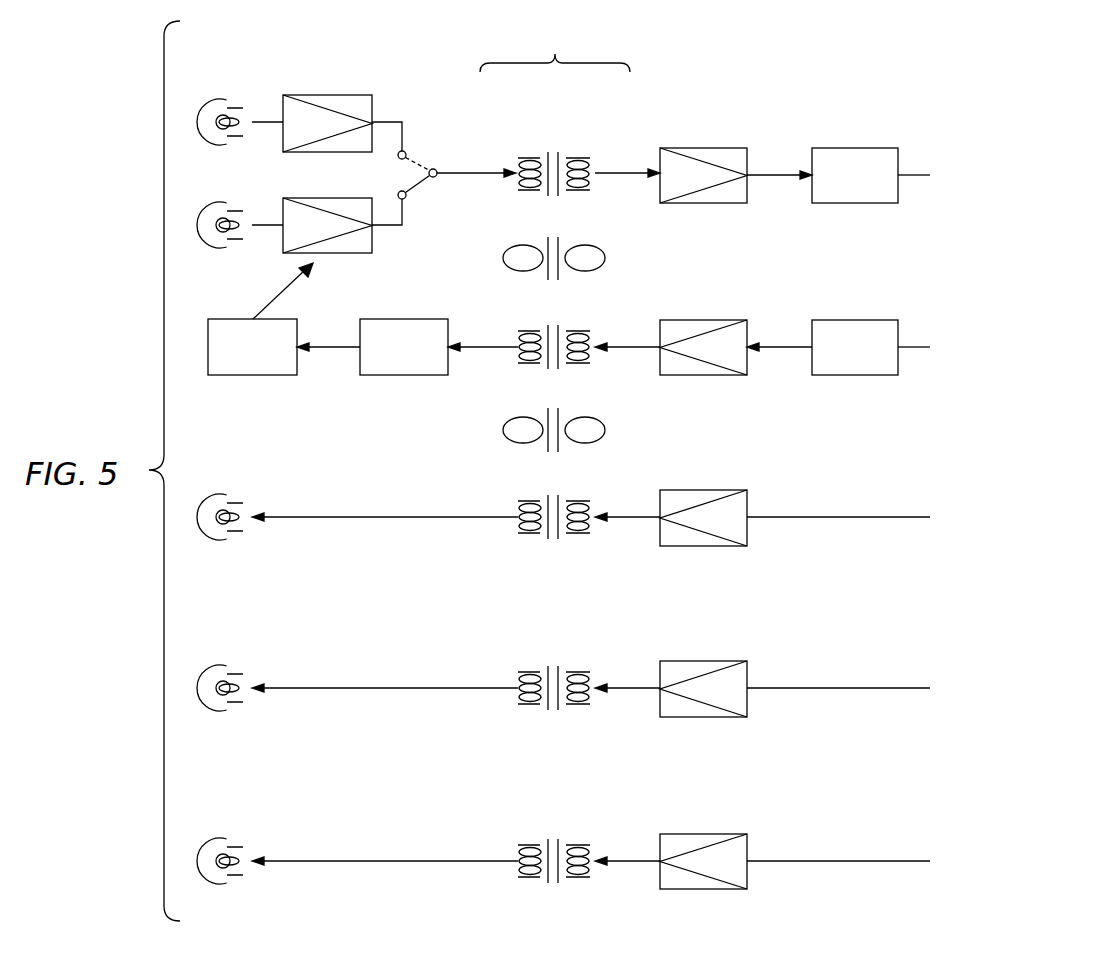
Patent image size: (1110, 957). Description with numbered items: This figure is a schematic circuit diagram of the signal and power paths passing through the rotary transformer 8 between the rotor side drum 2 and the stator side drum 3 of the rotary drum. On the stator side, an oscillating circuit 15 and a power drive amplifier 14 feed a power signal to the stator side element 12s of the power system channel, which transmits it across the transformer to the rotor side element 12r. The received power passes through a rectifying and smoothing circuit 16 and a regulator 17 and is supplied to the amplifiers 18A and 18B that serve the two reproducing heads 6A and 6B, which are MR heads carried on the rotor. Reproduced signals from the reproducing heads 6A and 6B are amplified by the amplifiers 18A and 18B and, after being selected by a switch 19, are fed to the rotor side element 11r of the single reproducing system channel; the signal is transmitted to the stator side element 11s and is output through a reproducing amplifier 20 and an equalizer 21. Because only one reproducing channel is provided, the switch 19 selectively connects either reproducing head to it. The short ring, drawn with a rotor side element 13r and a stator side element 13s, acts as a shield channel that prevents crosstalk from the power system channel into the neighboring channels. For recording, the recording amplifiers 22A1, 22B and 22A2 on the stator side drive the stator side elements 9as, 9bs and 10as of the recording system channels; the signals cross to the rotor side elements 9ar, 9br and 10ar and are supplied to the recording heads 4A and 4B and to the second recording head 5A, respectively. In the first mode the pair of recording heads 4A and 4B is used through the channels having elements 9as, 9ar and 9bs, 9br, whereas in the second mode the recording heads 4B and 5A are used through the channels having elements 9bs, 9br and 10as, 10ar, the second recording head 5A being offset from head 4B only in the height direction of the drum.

The rotor side drum 2 is at (525, 151).
The stator side drum 3 is at (583, 151).
The recording head 4A is at (215, 666).
The recording head 4B is at (214, 495).
The second recording head 5A is at (215, 839).
The reproducing head 6A is at (214, 100).
The reproducing head 6B is at (214, 205).
The rotary transformer 8 is at (547, 47).
The rotor side element of recording system channel 9a 9ar is at (522, 706).
The stator side element of recording system channel 9a 9as is at (586, 706).
The rotor side element of recording system channel 9b 9br is at (522, 535).
The stator side element of recording system channel 9b 9bs is at (586, 535).
The rotor side element of recording system channel 10a 10ar is at (522, 879).
The stator side element of recording system channel 10a 10as is at (586, 879).
The rotor side element of reproducing system channel 11 11r is at (522, 192).
The stator side element of reproducing system channel 11 11s is at (586, 192).
The rotor side element of power system channel 12 12r is at (522, 365).
The stator side element of power system channel 12 12s is at (586, 365).
The rotor side element of short ring 13 13r is at (503, 258).
The stator side element of short ring 13 13s is at (605, 258).
The power drive amplifier 14 is at (705, 320).
The oscillating circuit 15 is at (859, 320).
The rectifying and smoothing circuit 16 is at (406, 319).
The regulator 17 is at (224, 319).
The amplifier 18A is at (328, 95).
The amplifier 18B is at (328, 198).
The switch 19 is at (424, 161).
The reproducing amplifier 20 is at (705, 148).
The equalizer 21 is at (859, 148).
The recording amplifier 22A1 is at (704, 661).
The recording amplifier 22A2 is at (704, 834).
The recording amplifier 22B is at (704, 490).